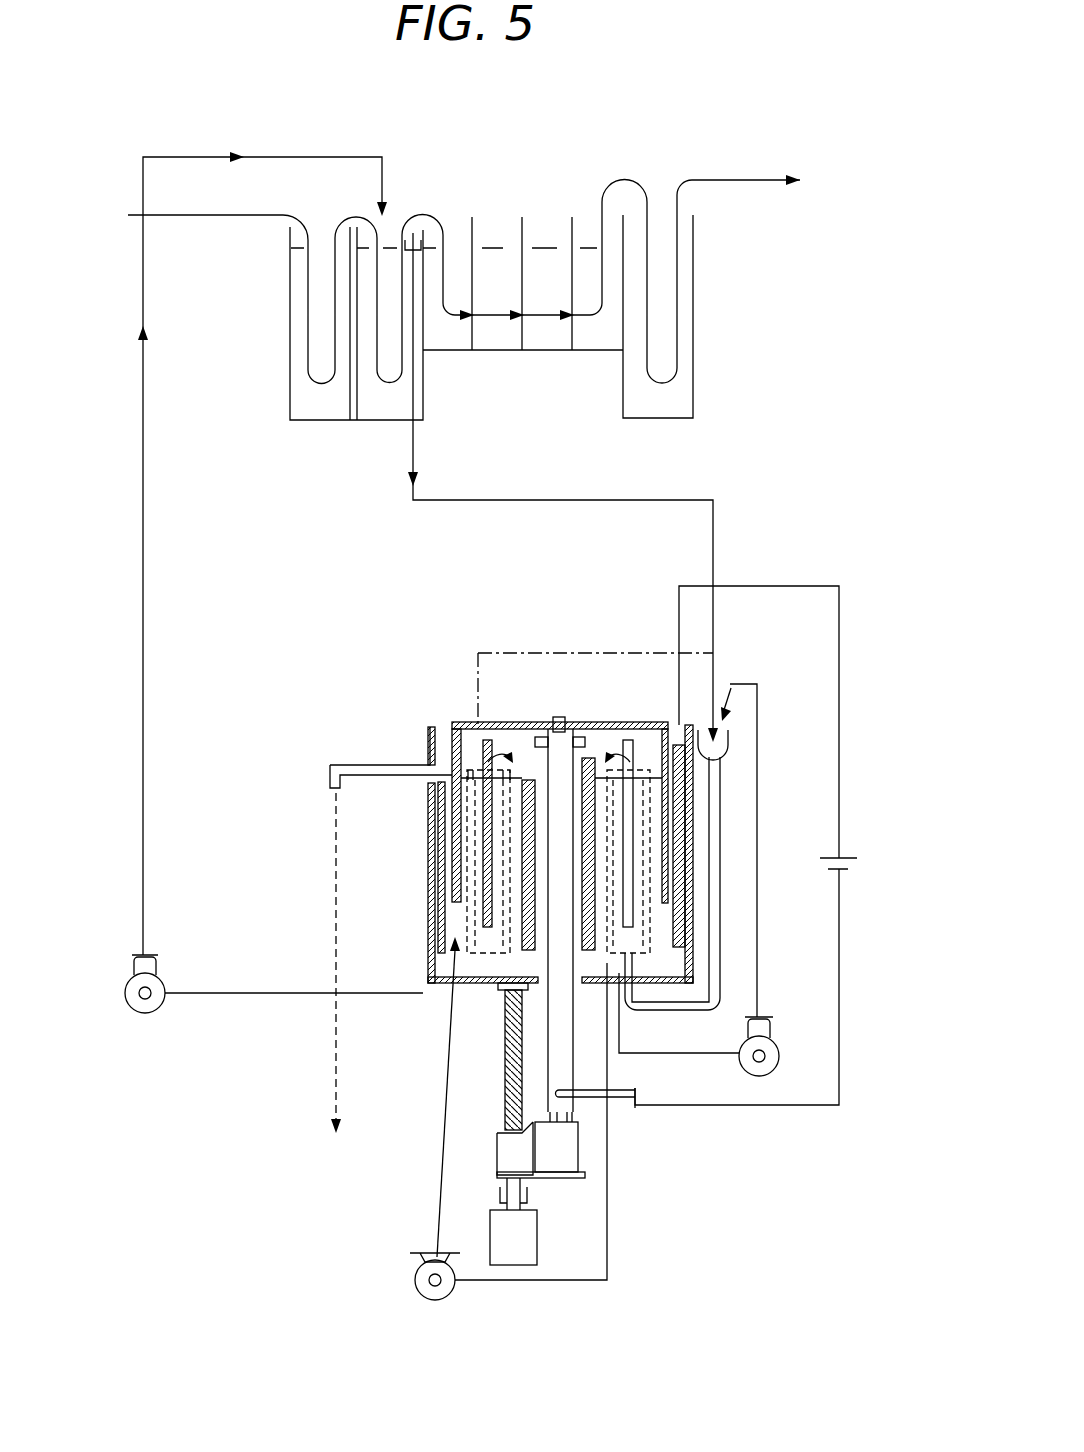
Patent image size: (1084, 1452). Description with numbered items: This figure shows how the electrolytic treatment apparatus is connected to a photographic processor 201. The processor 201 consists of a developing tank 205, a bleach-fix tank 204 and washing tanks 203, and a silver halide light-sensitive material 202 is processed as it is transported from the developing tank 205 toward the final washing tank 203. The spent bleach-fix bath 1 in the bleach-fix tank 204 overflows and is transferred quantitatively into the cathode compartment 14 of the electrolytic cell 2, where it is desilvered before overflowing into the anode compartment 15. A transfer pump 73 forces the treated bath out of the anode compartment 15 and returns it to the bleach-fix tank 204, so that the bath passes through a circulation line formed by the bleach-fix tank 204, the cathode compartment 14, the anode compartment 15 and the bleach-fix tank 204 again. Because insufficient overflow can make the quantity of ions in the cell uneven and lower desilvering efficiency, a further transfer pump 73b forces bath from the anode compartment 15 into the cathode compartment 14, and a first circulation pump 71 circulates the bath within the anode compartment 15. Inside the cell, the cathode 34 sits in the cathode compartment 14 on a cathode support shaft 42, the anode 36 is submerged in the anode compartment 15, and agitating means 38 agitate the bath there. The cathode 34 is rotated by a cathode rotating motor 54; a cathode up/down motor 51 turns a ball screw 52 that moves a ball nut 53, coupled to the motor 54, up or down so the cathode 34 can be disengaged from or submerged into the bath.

The spent bleach-fix bath 1 is at (533, 777).
The electrolytic cell 2 is at (428, 743).
The cathode compartment 14 is at (463, 810).
The anode compartment 15 is at (453, 922).
The cathode 34 is at (500, 773).
The anode 36 is at (435, 960).
The agitating means 38 is at (626, 858).
The cathode support shaft 42 is at (583, 747).
The cathode up/down motor 51 is at (537, 1238).
The ball screw 52 is at (505, 1045).
The ball nut 53 is at (503, 1150).
The cathode rotating motor 54 is at (583, 1153).
The first circulation pump 71 is at (415, 1282).
The transfer pump 73 is at (133, 1013).
The transfer pump 73b is at (785, 1062).
The processor 201 is at (693, 335).
The silver halide light-sensitive material 202 is at (750, 162).
The washing tanks 203 is at (580, 190).
The bleach-fix tank 204 is at (402, 200).
The developing tank 205 is at (322, 236).